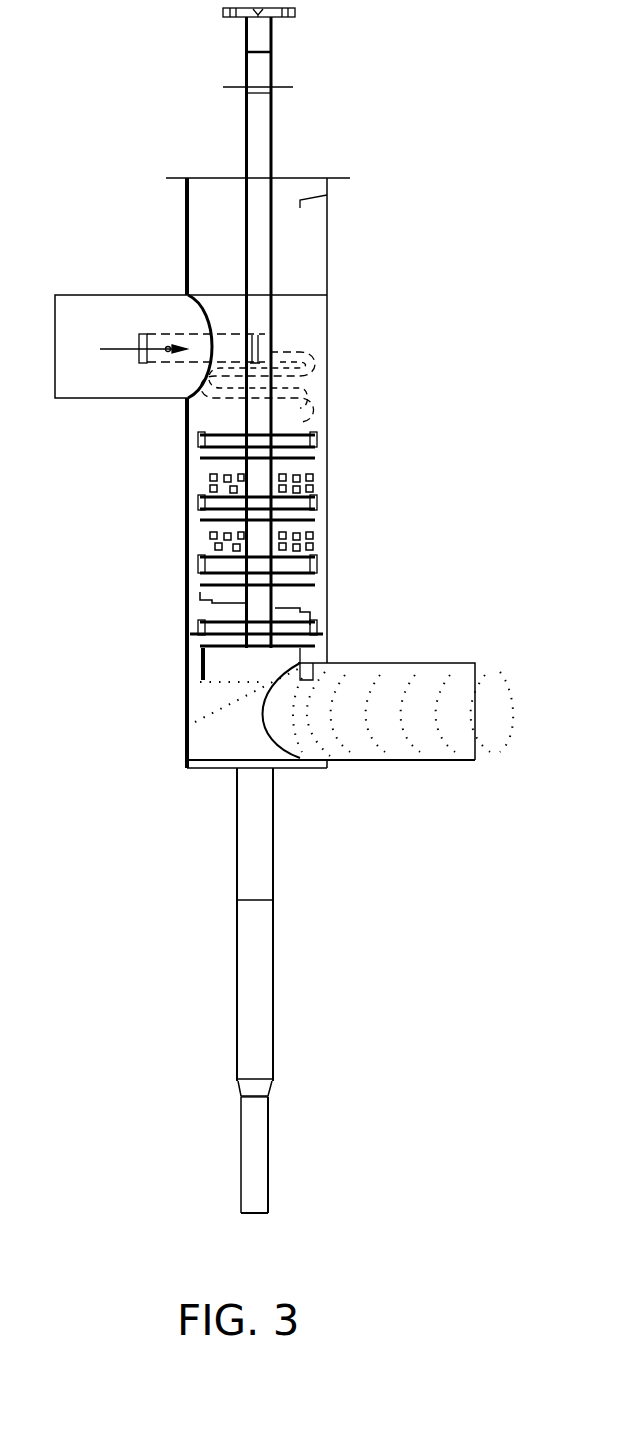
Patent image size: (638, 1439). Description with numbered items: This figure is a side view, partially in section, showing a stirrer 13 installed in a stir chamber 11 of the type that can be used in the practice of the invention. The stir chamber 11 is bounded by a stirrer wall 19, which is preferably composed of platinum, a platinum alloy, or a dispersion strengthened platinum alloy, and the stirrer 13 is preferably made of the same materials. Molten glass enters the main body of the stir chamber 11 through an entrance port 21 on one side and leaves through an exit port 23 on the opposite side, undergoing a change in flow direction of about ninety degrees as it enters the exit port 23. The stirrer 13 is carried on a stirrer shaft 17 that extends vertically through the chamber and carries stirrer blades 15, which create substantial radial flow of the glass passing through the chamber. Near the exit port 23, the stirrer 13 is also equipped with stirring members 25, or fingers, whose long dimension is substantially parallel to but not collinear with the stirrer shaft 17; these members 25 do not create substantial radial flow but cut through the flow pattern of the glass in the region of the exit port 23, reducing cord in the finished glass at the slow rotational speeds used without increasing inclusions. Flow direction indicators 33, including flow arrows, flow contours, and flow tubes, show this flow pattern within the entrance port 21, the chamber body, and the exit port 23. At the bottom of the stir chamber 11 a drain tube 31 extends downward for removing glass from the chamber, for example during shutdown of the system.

The stir chamber 11 is at (328, 369).
The stirrer 13 is at (203, 478).
The stirrer blade 15 is at (207, 527).
The stirrer shaft 17 is at (257, 118).
The stirrer wall 19 is at (300, 208).
The entrance port 21 is at (70, 372).
The exit port 23 is at (392, 733).
The stirring member (finger) 25 is at (197, 665).
The drain tube 31 is at (250, 862).
The flow direction indicators 33 is at (130, 348).